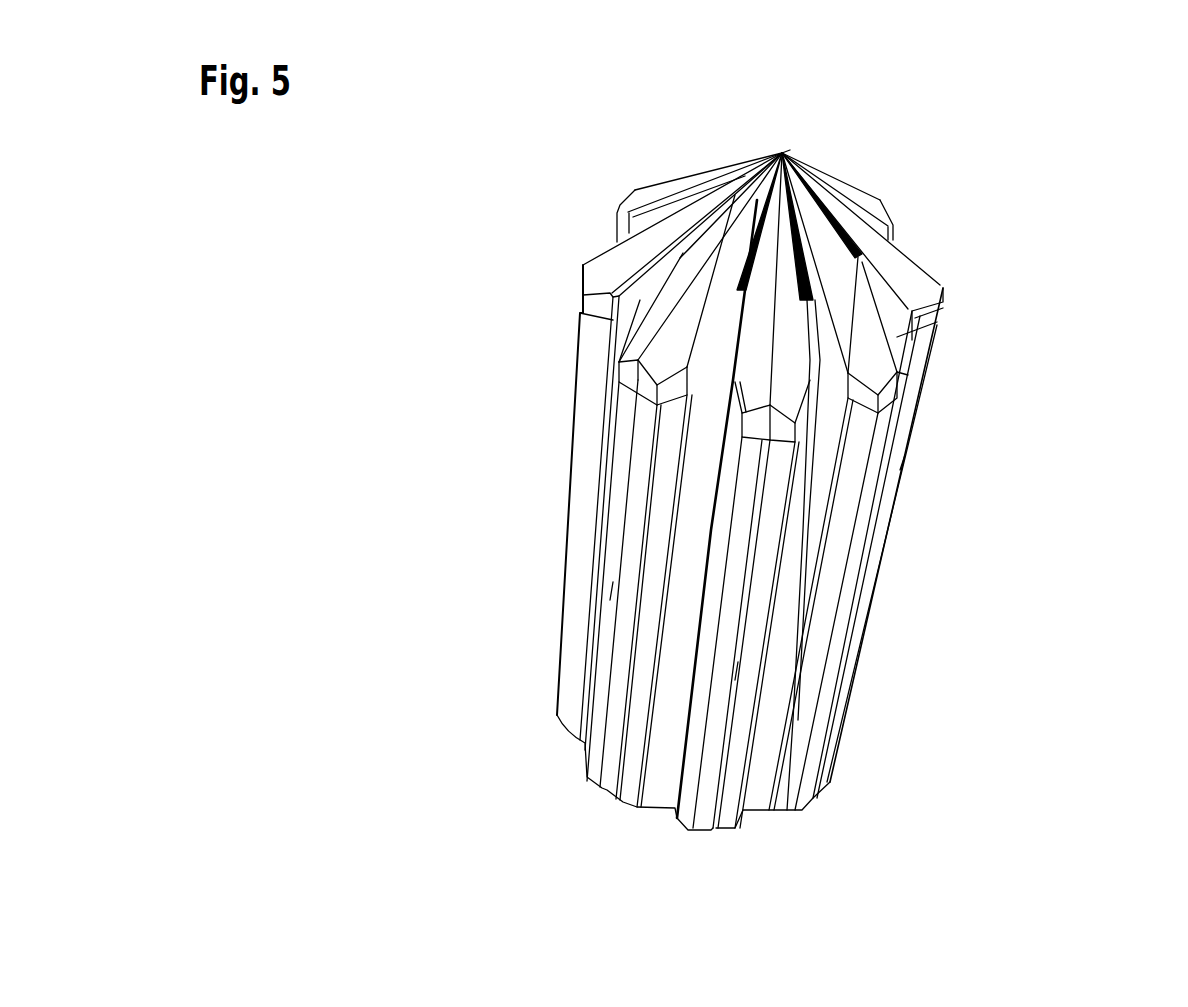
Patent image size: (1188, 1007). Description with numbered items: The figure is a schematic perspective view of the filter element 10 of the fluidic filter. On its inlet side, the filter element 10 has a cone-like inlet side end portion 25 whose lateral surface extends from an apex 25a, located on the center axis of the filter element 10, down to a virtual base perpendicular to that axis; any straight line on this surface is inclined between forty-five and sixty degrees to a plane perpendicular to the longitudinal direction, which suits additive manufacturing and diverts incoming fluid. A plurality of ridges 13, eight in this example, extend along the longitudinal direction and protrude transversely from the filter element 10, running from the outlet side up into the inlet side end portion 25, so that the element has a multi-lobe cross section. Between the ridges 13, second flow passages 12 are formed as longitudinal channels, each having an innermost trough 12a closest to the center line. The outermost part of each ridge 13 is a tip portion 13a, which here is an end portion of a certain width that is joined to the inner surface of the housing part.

The filter element 10 is at (460, 204).
The inlet side end portion 25 is at (937, 208).
The apex 25a is at (782, 153).
The second flow passage 12 is at (850, 722).
The trough 12a is at (705, 582).
The ridge 13 is at (663, 467).
The tip portion 13a is at (905, 455).